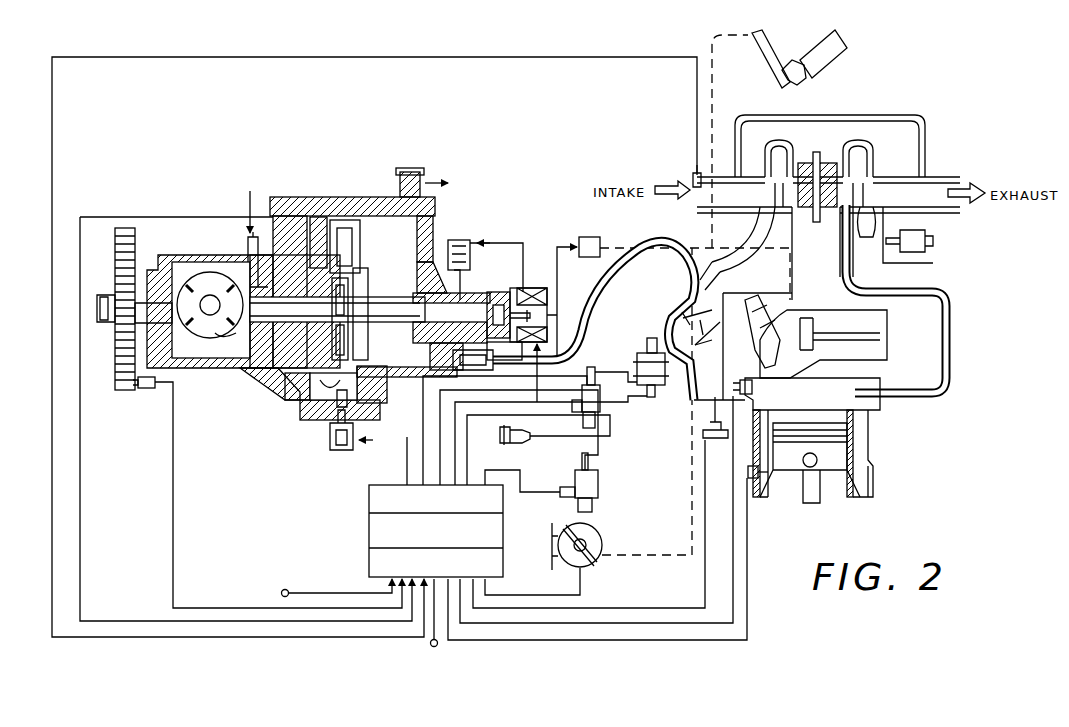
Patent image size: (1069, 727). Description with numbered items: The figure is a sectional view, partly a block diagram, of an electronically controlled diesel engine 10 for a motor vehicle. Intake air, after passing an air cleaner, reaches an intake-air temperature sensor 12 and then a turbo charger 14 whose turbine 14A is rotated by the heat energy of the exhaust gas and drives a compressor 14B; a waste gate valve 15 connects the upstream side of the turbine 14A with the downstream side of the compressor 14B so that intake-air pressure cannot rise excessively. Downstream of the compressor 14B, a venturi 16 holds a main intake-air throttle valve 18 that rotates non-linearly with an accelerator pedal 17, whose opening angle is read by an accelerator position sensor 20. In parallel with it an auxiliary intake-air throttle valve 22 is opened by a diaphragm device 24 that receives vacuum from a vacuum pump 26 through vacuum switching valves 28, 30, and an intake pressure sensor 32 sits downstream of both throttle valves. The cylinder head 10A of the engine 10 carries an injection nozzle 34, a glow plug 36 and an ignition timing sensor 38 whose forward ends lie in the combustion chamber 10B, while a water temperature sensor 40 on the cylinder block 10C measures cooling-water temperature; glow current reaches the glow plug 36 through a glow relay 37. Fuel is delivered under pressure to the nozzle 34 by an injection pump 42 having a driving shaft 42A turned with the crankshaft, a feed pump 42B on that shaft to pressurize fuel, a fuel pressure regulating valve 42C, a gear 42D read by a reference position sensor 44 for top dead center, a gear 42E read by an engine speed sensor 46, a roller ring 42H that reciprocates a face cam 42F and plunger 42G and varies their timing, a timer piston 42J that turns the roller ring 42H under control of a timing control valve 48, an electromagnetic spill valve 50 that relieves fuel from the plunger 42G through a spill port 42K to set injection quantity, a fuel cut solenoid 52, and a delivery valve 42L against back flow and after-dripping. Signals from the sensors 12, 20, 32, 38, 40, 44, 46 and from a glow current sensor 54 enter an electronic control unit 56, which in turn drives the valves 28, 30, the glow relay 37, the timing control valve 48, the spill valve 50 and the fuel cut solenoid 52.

The diesel engine 10 is at (820, 354).
The cylinder head 10A is at (823, 327).
The engine combustion chamber 10B is at (858, 420).
The cylinder block 10C is at (866, 442).
The intake-air temperature sensor 12 is at (695, 177).
The turbo charger 14 is at (828, 186).
The turbine 14A is at (862, 158).
The compressor 14B is at (790, 158).
The waste gate valve 15 is at (926, 246).
The venturi 16 is at (680, 313).
The accelerator pedal 17 is at (773, 70).
The main intake-air throttle valve 18 is at (706, 336).
The accelerator position sensor 20 is at (603, 543).
The auxiliary intake-air throttle valve 22 is at (664, 315).
The diaphragm device 24 is at (640, 353).
The vacuum pump 26 is at (503, 445).
The vacuum switching valve 28 is at (582, 393).
The vacuum switching valve 30 is at (599, 486).
The intake pressure sensor 32 is at (712, 440).
The injection nozzle 34 is at (768, 340).
The glow plug 36 is at (835, 320).
The glow relay 37 is at (600, 229).
The ignition timing sensor 38 is at (740, 386).
The water temperature sensor 40 is at (753, 480).
The injection pump 42 is at (323, 300).
The driving shaft 42A is at (103, 325).
The feed pump 42B is at (222, 340).
The fuel pressure regulating valve 42C is at (287, 216).
The gear 42D is at (133, 247).
The gear 42E is at (295, 388).
The face cam 42F is at (360, 285).
The plunger 42G is at (392, 305).
The roller ring 42H is at (345, 270).
The timer piston 42J is at (322, 412).
The spill port 42K is at (478, 298).
The delivery valve 42L is at (440, 372).
The reference position sensor 44 is at (145, 389).
The engine speed sensor 46 is at (333, 213).
The timing control valve 48 is at (334, 452).
The electromagnetic spill valve 50 is at (540, 290).
The fuel cut solenoid 52 is at (463, 240).
The glow current sensor 54 is at (287, 590).
The electronic control unit 56 is at (369, 528).